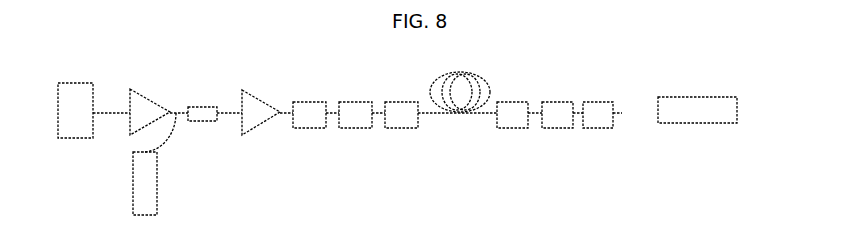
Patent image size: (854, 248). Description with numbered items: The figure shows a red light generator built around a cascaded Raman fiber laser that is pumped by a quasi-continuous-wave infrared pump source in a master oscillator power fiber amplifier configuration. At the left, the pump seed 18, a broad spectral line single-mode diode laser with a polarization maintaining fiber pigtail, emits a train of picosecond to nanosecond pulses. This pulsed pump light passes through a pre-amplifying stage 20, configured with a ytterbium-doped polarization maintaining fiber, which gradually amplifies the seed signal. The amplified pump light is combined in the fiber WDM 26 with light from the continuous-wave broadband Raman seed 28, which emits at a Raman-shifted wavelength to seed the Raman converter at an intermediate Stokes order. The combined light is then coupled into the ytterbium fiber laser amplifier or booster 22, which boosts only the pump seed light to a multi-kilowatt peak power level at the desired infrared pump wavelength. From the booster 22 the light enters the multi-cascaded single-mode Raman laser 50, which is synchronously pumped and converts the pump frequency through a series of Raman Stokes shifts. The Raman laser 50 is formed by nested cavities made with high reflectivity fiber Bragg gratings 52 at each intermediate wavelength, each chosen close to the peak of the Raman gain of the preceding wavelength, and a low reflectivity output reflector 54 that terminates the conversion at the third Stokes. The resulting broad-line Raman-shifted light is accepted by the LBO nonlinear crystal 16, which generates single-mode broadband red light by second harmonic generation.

The LBO nonlinear crystal 16 is at (688, 122).
The pump seed 18 is at (64, 121).
The pre-amplifying stage 20 is at (132, 121).
The Yb fiber laser amplifier or booster 22 is at (244, 120).
The fiber WDM 26 is at (215, 127).
The Raman seed 28 is at (135, 195).
The multi-cascaded SM LP Raman laser 50 is at (421, 66).
The high reflectivity fiber Bragg gratings 52 is at (308, 128).
The low reflectivity output reflector 54 is at (597, 128).